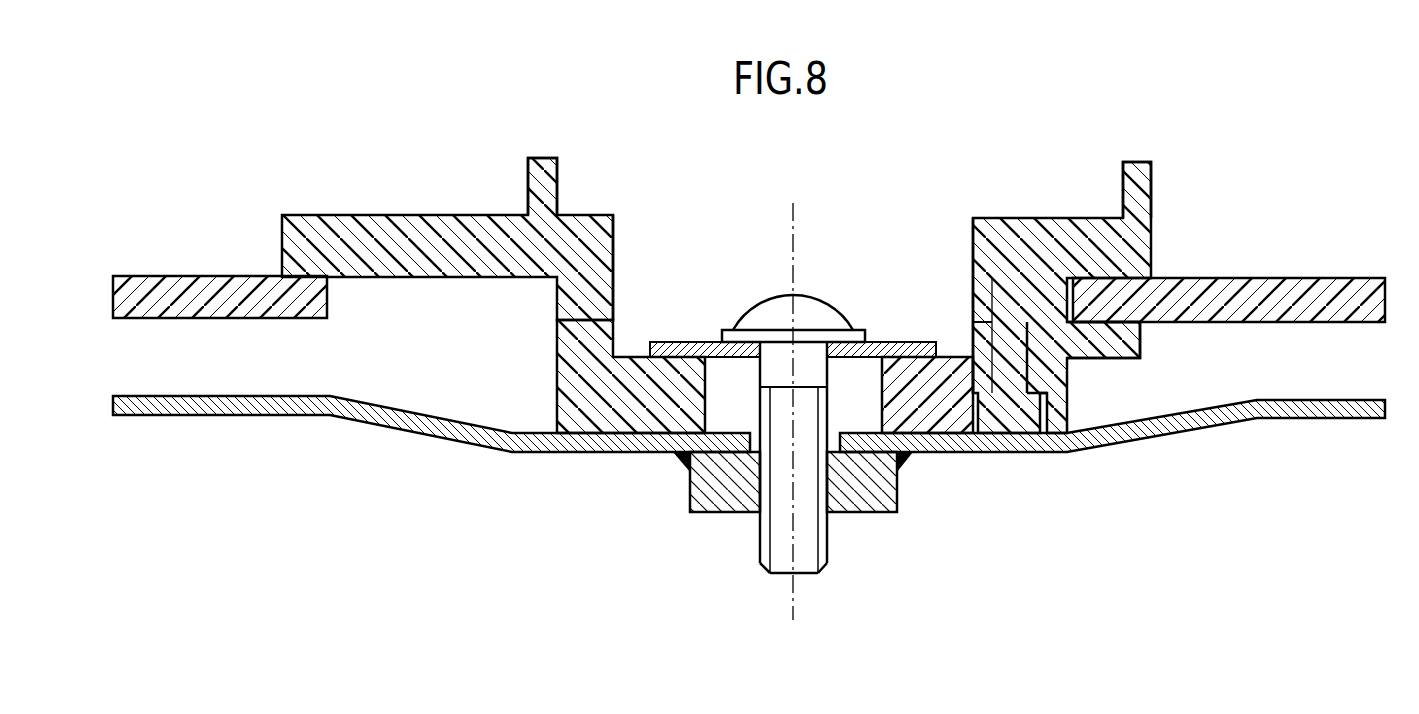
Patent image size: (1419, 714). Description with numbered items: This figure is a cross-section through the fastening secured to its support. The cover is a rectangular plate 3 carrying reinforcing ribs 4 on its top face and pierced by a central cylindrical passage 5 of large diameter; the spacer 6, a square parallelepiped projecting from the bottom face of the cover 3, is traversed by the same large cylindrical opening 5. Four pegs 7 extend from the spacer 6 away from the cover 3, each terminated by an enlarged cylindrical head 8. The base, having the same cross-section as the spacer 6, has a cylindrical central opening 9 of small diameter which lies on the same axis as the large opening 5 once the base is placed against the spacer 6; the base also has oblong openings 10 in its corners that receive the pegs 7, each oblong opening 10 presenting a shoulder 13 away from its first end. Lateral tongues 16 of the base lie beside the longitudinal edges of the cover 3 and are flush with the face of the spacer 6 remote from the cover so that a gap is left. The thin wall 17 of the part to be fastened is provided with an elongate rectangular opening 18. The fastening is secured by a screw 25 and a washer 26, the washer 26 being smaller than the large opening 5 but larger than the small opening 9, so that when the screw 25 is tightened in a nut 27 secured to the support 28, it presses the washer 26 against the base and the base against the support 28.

The rectangular plate 3 is at (1045, 223).
The reinforcing ribs 4 is at (543, 178).
The cylindrical passage 5 is at (972, 250).
The spacer 6 is at (598, 277).
The pegs 7 is at (1005, 332).
The enlarged cylindrical head 8 is at (1002, 418).
The cylindrical central opening 9 is at (882, 385).
The oblong openings 10 is at (1032, 372).
The shoulder 13 is at (978, 388).
The lateral tongues 16 is at (1130, 336).
The thin wall 17 is at (1290, 290).
The elongate opening 18 is at (461, 283).
The screw 25 is at (818, 318).
The washer 26 is at (689, 340).
The nut 27 is at (735, 495).
The support 28 is at (310, 408).